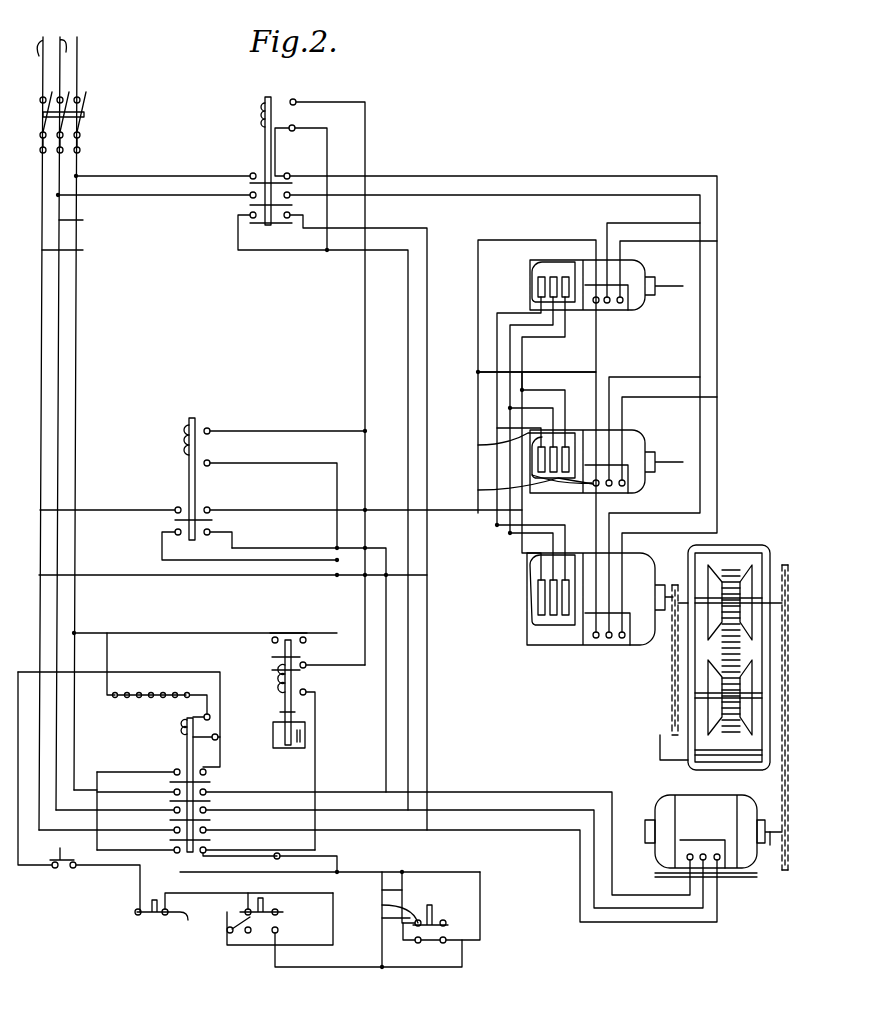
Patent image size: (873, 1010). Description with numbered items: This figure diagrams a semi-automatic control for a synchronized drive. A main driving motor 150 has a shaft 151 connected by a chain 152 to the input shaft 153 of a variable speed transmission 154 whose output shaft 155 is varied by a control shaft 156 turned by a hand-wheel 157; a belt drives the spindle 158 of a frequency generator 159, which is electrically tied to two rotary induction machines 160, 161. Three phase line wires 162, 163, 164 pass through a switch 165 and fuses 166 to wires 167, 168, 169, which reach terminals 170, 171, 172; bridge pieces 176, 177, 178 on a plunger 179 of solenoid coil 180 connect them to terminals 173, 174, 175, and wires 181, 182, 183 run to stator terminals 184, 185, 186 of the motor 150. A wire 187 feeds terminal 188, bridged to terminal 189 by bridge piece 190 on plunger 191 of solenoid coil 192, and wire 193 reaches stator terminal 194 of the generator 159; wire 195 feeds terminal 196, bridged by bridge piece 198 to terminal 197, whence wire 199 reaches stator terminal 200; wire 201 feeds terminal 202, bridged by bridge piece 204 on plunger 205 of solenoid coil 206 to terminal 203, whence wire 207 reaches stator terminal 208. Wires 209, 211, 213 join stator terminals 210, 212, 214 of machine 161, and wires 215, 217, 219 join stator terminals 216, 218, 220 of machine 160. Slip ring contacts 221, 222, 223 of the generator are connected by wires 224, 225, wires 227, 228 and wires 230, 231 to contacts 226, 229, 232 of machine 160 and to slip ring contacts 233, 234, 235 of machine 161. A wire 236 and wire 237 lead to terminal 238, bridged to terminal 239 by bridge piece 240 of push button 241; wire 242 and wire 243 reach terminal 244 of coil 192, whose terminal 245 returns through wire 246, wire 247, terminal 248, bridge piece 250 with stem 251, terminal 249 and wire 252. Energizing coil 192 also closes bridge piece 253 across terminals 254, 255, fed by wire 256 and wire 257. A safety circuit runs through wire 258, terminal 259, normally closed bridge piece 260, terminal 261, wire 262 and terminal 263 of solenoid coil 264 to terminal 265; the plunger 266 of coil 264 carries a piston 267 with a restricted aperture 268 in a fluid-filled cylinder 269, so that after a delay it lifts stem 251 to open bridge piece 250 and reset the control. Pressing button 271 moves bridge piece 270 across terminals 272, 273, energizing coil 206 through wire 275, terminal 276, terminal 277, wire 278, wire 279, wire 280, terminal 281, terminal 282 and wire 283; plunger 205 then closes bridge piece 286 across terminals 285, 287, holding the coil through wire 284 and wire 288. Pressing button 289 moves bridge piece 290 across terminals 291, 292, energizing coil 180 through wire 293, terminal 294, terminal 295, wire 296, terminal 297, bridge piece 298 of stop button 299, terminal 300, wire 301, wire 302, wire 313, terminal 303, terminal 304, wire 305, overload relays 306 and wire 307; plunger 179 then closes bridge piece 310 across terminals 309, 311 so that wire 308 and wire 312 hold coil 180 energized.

The motor 150 is at (705, 784).
The motor base 151 is at (770, 845).
The motor shaft 152 is at (770, 776).
The shaft 153 is at (782, 565).
The gear casing 154 is at (738, 553).
The shaft 155 is at (672, 695).
The bracket 156 is at (660, 737).
The bracket 157 is at (660, 758).
The shaft 158 is at (675, 584).
The motor 159 is at (641, 555).
The motor 160 is at (645, 422).
The motor 161 is at (638, 267).
The supply line 162 is at (47, 416).
The supply line 163 is at (81, 406).
The supply line 164 is at (80, 50).
The main switch 165 is at (86, 114).
The switch contacts 166 is at (63, 133).
The conductor 167 is at (83, 249).
The conductor 168 is at (93, 219).
The fuses 169 is at (81, 155).
The contact 170 is at (174, 833).
The contact 171 is at (178, 820).
The contact 172 is at (174, 795).
The contact 173 is at (207, 830).
The contact 174 is at (207, 811).
The contact 175 is at (208, 793).
The contact 176 is at (208, 840).
The contact 177 is at (277, 806).
The contact 178 is at (174, 813).
The armature 179 is at (185, 745).
The relay 180 is at (185, 730).
The conductor 181 is at (535, 832).
The conductor 182 is at (520, 810).
The conductor 183 is at (474, 790).
The motor terminals 184 is at (714, 870).
The terminal 185 is at (687, 860).
The terminal 186 is at (682, 863).
The conductor 187 is at (170, 175).
The armature 188 is at (254, 170).
The contact 189 is at (284, 173).
The contact 190 is at (250, 177).
The conductor 191 is at (275, 145).
The relay coil 192 is at (264, 111).
The conductor 193 is at (468, 164).
The terminal 194 is at (620, 640).
The conductor 195 is at (160, 196).
The contact 196 is at (250, 197).
The contact 197 is at (291, 197).
The contact 198 is at (250, 217).
The conductor 199 is at (465, 200).
The terminal 200 is at (575, 675).
The conductor 201 is at (100, 508).
The contact 202 is at (178, 508).
The contact 203 is at (211, 507).
The contact 204 is at (176, 532).
The relay 205 is at (190, 418).
The relay coil 206 is at (183, 447).
The conductor 207 is at (315, 500).
The terminal 208 is at (595, 640).
The conductor 209 is at (675, 236).
The terminal 210 is at (621, 304).
The conductor 211 is at (685, 228).
The terminal 212 is at (592, 307).
The conductor 213 is at (480, 416).
The conductor 214 is at (556, 372).
The conductor 215 is at (679, 392).
The terminal 216 is at (640, 486).
The conductor 217 is at (660, 377).
The terminal 218 is at (605, 488).
The conductor 219 is at (592, 390).
The conductor 220 is at (562, 494).
The field winding 221 is at (538, 588).
The conductor 222 is at (545, 618).
The conductor 223 is at (552, 627).
The conductor 224 is at (520, 555).
The conductor 225 is at (476, 447).
The field winding 226 is at (536, 464).
The conductor 227 is at (508, 535).
The conductor 228 is at (542, 408).
The field winding 229 is at (540, 478).
The conductor 230 is at (495, 523).
The conductor 231 is at (580, 396).
The conductor 232 is at (476, 494).
The field winding 233 is at (537, 291).
The field winding 234 is at (560, 276).
The field housing 235 is at (570, 256).
The conductor 236 is at (147, 580).
The conductor 237 is at (428, 617).
The contact 238 is at (443, 944).
The contact 239 is at (416, 944).
The contact 240 is at (462, 906).
The contact 241 is at (428, 905).
The conductor 242 is at (382, 890).
The conductor 243 is at (343, 148).
The contact 244 is at (292, 128).
The contact 245 is at (294, 101).
The conductor 246 is at (367, 124).
The relay coil 247 is at (280, 684).
The relay 248 is at (309, 638).
The armature 249 is at (272, 643).
The contact 250 is at (280, 638).
The armature 251 is at (282, 657).
The conductor 252 is at (212, 627).
The contact 253 is at (287, 219).
The conductor 254 is at (323, 512).
The conductor 255 is at (268, 232).
The conductor 256 is at (432, 379).
The conductor 257 is at (300, 255).
The conductor 258 is at (330, 877).
The contact 259 is at (174, 852).
The conductor 260 is at (210, 851).
The contact 261 is at (240, 864).
The contact 262 is at (283, 860).
The contact 263 is at (310, 686).
The armature 264 is at (285, 697).
The contact 265 is at (316, 659).
The armature 266 is at (280, 711).
The contact 267 is at (280, 748).
The contact 268 is at (293, 748).
The contact 269 is at (280, 776).
The contact 270 is at (279, 915).
The push button 271 is at (262, 897).
The contact 272 is at (279, 931).
The switch 273 is at (246, 934).
The conductor 275 is at (382, 919).
The conductor 276 is at (382, 905).
The contact 277 is at (445, 920).
The conductor 278 is at (463, 945).
The conductor 279 is at (227, 925).
The conductor 280 is at (333, 935).
The contact 281 is at (211, 462).
The contact 282 is at (211, 428).
The conductor 283 is at (294, 430).
The conductor 284 is at (385, 752).
The contact 285 is at (213, 531).
The contact 286 is at (218, 546).
The contact 287 is at (250, 547).
The conductor 288 is at (262, 550).
The switch 289 is at (60, 850).
The contact 290 is at (73, 869).
The conductor 291 is at (30, 903).
The contact 292 is at (78, 868).
The contact 293 is at (244, 910).
The push button 294 is at (259, 895).
The contact 295 is at (279, 910).
The conductor 296 is at (214, 877).
The contact 297 is at (170, 916).
The contact 298 is at (140, 916).
The push button 299 is at (156, 898).
The switch 300 is at (136, 914).
The conductor 301 is at (138, 903).
The conductor 302 is at (52, 868).
The contact 303 is at (219, 740).
The contact 304 is at (195, 717).
The conductor 305 is at (202, 690).
The resistor 306 is at (130, 700).
The conductor 307 is at (108, 652).
The conductor 308 is at (107, 772).
The contact 309 is at (172, 771).
The armature 310 is at (172, 783).
The contact 311 is at (207, 772).
The contact 312 is at (221, 760).
The contact 313 is at (216, 736).